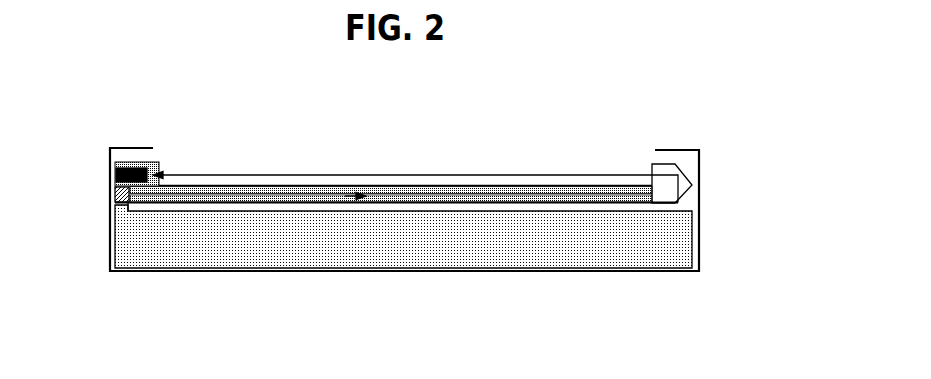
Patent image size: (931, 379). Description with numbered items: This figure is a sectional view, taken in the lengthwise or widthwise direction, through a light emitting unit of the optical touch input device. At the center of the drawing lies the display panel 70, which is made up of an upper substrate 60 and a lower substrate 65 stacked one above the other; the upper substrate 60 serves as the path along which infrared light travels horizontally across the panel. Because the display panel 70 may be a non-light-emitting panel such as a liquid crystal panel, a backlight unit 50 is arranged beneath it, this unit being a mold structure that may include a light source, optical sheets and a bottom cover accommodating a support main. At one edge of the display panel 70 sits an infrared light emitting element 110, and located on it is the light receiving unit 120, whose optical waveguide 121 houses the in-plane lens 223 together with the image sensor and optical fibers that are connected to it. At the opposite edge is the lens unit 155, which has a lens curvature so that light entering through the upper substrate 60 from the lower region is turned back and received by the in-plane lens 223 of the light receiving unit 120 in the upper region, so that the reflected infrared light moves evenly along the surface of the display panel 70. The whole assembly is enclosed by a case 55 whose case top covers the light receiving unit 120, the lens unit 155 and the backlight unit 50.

The backlight unit 50 is at (682, 243).
The case 55 is at (700, 200).
The upper substrate 60 is at (557, 201).
The lower substrate 65 is at (619, 207).
The display panel 70 is at (396, 272).
The infrared light emitting element 110 is at (117, 191).
The light receiving unit 120 is at (156, 121).
The optical waveguide 121 is at (152, 162).
The lens unit 155 is at (676, 166).
The in-plane lens 223 is at (125, 163).